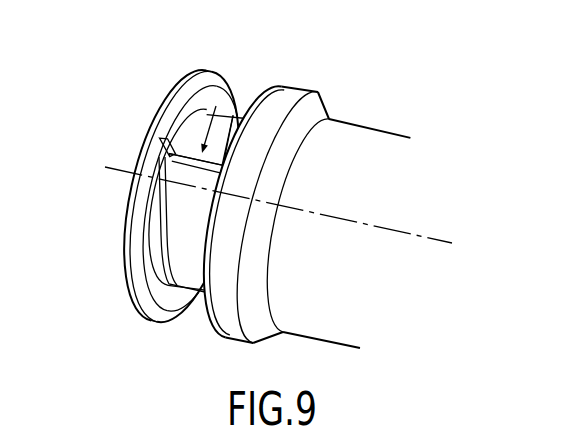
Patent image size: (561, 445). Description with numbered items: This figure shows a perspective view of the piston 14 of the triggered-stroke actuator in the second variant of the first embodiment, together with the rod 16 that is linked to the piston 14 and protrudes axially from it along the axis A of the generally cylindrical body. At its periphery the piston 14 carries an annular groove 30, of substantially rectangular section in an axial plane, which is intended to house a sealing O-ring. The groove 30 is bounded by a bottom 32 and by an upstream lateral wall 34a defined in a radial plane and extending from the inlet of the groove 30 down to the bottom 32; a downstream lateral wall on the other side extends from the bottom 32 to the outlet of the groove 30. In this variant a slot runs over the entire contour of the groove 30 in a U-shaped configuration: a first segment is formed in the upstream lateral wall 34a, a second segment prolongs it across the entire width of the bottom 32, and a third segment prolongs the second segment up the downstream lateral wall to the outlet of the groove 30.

The piston 14 is at (189, 70).
The upstream lateral wall 34a is at (198, 112).
The bottom 32 is at (178, 248).
The annular groove 30 is at (197, 298).
The rod 16 is at (321, 328).
The axis A is at (363, 224).